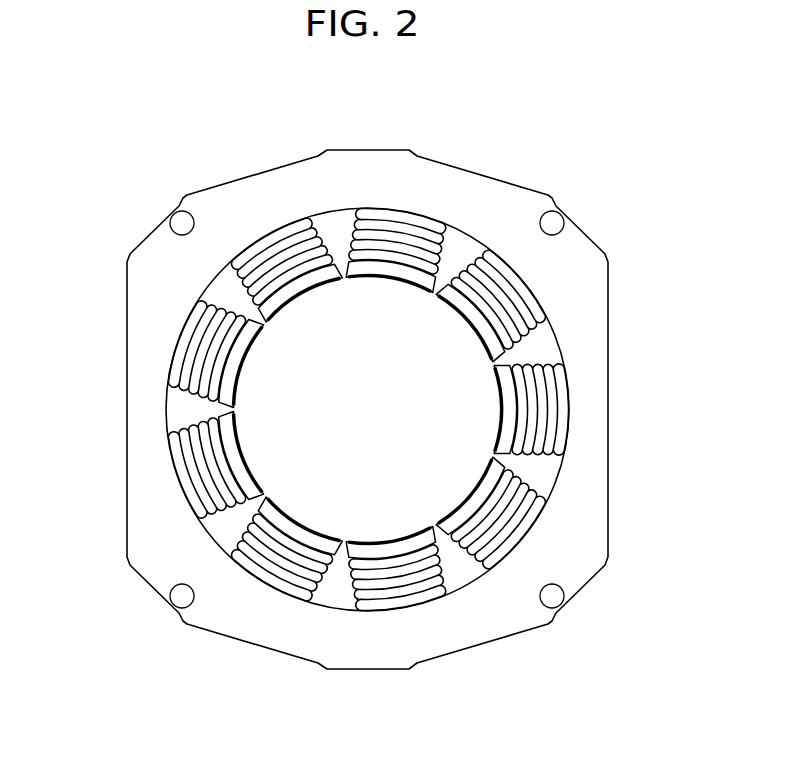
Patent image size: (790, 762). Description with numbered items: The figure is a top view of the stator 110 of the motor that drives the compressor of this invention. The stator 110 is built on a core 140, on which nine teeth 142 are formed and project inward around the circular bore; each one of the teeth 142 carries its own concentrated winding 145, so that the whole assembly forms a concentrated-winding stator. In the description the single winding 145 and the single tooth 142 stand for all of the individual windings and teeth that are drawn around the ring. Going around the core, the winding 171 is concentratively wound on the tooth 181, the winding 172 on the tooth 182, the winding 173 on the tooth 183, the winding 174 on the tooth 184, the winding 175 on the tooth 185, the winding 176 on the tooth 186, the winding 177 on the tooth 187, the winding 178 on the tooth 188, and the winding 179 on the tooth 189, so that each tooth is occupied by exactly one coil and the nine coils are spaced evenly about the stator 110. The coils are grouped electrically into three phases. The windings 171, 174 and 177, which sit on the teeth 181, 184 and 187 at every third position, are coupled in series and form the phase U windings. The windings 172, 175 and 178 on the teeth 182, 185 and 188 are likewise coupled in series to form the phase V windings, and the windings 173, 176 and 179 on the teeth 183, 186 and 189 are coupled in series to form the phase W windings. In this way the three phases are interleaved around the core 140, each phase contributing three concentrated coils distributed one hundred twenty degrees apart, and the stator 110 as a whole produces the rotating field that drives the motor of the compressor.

The stator 110 is at (505, 142).
The core 140 is at (352, 182).
The teeth 142 is at (363, 262).
The concentrated winding 145 is at (407, 235).
The winding 171 is at (418, 237).
The winding 172 is at (510, 300).
The winding 173 is at (547, 410).
The winding 174 is at (520, 517).
The winding 175 is at (403, 585).
The winding 176 is at (277, 562).
The winding 177 is at (195, 467).
The winding 178 is at (197, 345).
The winding 179 is at (275, 255).
The tooth 181 is at (437, 263).
The tooth 182 is at (500, 347).
The tooth 183 is at (508, 433).
The tooth 184 is at (460, 518).
The tooth 185 is at (372, 555).
The tooth 186 is at (273, 520).
The tooth 187 is at (222, 435).
The tooth 188 is at (243, 330).
The tooth 189 is at (308, 273).